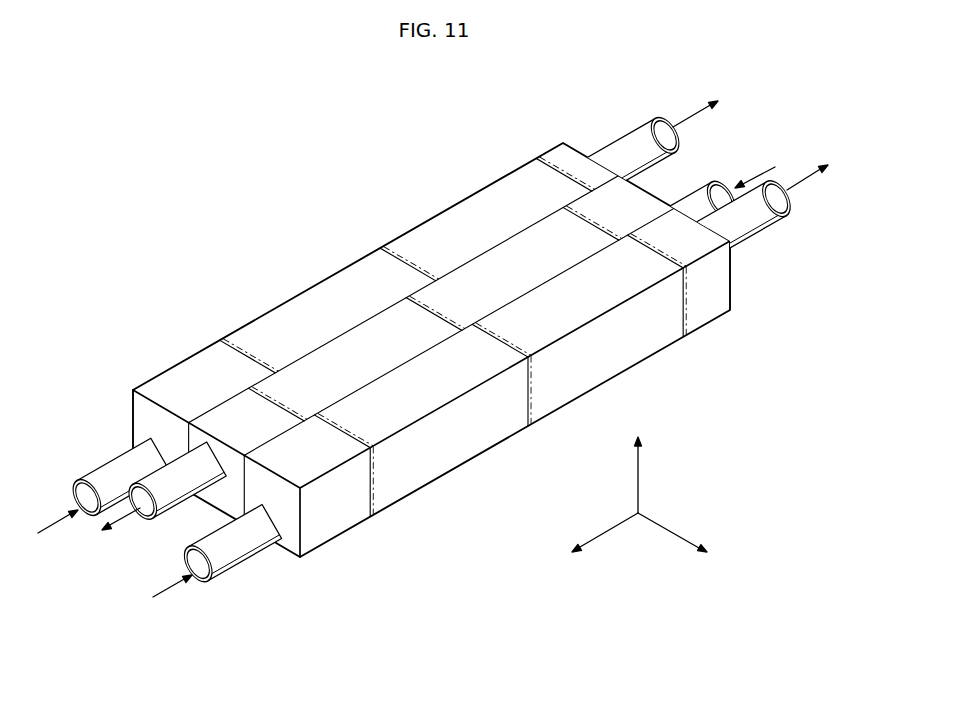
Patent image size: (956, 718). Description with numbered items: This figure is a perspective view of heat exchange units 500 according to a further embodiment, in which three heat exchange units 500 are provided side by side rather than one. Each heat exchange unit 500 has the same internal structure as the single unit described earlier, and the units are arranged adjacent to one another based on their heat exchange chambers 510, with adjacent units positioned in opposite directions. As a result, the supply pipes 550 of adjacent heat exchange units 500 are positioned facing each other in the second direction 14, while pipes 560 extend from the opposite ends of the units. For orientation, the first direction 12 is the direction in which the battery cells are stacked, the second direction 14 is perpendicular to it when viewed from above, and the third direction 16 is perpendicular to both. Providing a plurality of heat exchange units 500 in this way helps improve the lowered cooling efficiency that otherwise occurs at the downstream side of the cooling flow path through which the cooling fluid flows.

The heat exchange unit 500 is at (211, 115).
The heat exchange chamber 510 is at (300, 381).
The supply pipe 550 is at (707, 200).
The outlet pipe 560 is at (638, 141).
The first direction 12 is at (686, 543).
The second direction 14 is at (591, 543).
The third direction 16 is at (638, 458).